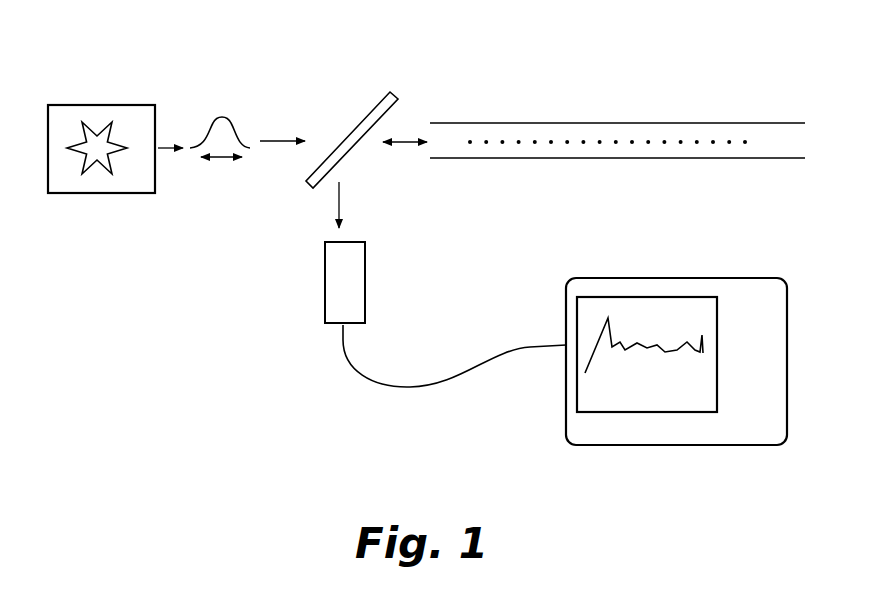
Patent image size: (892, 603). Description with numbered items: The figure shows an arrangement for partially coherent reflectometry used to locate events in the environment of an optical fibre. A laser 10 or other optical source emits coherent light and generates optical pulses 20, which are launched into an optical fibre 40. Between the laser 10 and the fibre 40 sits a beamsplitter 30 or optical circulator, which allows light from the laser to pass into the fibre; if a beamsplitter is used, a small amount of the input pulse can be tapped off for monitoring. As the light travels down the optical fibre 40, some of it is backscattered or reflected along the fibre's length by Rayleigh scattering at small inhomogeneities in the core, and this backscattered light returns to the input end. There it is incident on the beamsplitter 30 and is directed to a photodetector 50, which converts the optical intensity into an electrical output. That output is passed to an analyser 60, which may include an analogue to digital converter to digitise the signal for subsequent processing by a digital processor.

The laser 10 is at (99, 98).
The optical pulses 20 is at (223, 113).
The beamsplitter 30 is at (360, 115).
The optical fibre 40 is at (587, 122).
The photodetector 50 is at (367, 285).
The analyser 60 is at (690, 273).